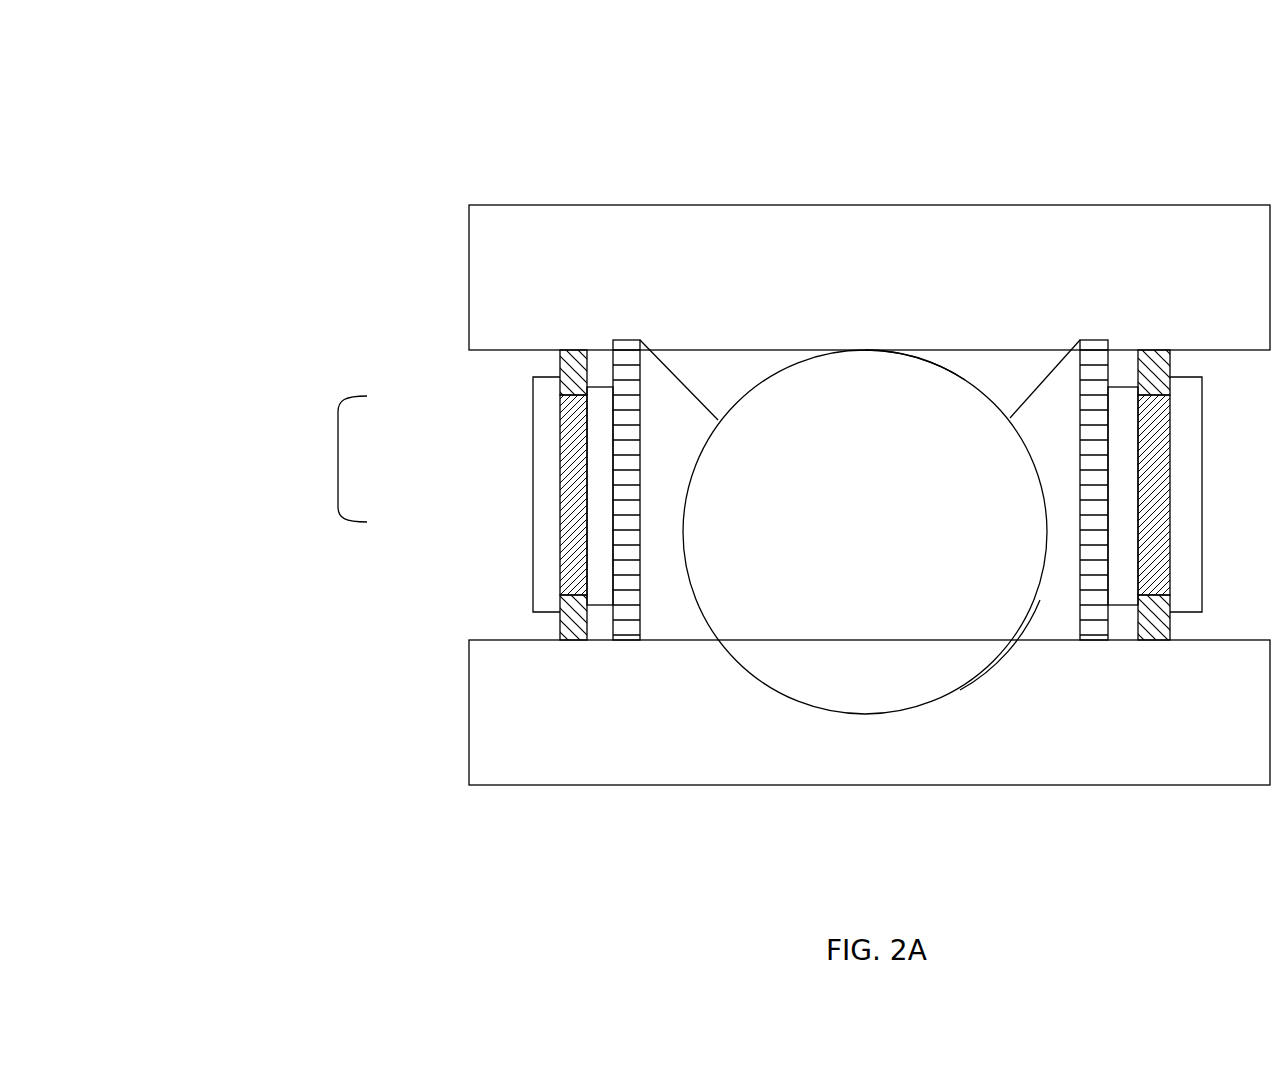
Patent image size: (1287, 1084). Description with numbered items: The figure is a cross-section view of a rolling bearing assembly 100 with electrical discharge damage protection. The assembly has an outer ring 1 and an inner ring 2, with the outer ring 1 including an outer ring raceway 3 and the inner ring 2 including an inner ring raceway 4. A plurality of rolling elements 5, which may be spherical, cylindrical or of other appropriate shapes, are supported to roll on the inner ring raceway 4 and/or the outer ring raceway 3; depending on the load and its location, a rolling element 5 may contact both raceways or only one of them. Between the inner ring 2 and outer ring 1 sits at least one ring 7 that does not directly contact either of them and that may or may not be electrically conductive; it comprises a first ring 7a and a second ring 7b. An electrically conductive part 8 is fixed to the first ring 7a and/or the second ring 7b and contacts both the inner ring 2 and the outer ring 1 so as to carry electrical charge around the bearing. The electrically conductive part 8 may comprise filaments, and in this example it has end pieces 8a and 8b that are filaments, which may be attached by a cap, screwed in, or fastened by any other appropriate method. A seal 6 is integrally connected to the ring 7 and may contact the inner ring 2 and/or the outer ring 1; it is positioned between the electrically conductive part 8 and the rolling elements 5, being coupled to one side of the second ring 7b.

The rolling bearing assembly 100 is at (286, 105).
The outer ring 1 is at (722, 205).
The inner ring 2 is at (469, 740).
The outer ring raceway 3 is at (915, 353).
The inner ring raceway 4 is at (990, 667).
The rolling elements 5 is at (853, 457).
The seal 6 is at (641, 607).
The ring 7 is at (335, 458).
The first ring 7a is at (532, 412).
The second ring 7b is at (603, 445).
The electrically conductive part 8 is at (560, 559).
The end piece 8a is at (560, 369).
The end piece 8b is at (560, 622).